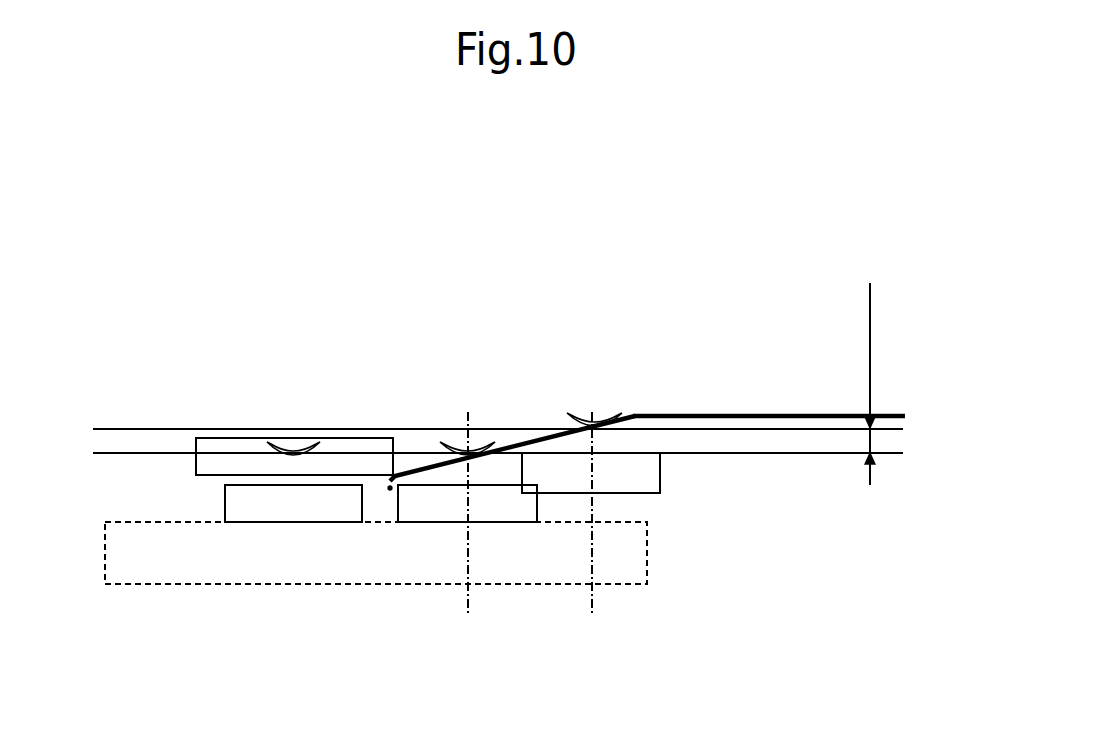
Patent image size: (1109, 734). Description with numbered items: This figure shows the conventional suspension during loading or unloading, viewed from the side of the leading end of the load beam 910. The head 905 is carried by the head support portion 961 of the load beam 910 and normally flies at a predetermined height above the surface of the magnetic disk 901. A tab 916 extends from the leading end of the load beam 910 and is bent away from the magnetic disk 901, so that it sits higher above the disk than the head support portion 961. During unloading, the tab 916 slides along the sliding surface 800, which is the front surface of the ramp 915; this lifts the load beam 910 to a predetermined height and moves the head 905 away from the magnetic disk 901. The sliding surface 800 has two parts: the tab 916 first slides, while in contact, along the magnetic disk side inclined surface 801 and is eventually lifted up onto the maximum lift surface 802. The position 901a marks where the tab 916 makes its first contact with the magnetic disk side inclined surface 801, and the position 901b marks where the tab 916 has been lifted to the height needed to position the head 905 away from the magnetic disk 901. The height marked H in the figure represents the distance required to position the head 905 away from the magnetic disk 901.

The sliding surface 800 is at (770, 265).
The magnetic disk side inclined surface 801 is at (634, 416).
The maximum lift surface 802 is at (737, 416).
The magnetic disk 901 is at (135, 575).
The position of first contact 901a is at (462, 593).
The position of required lift height 901b is at (590, 590).
The head 905 is at (225, 505).
The load beam 910 is at (243, 406).
The ramp 915 is at (900, 398).
The tab 916 is at (310, 441).
The head support portion 961 is at (393, 438).